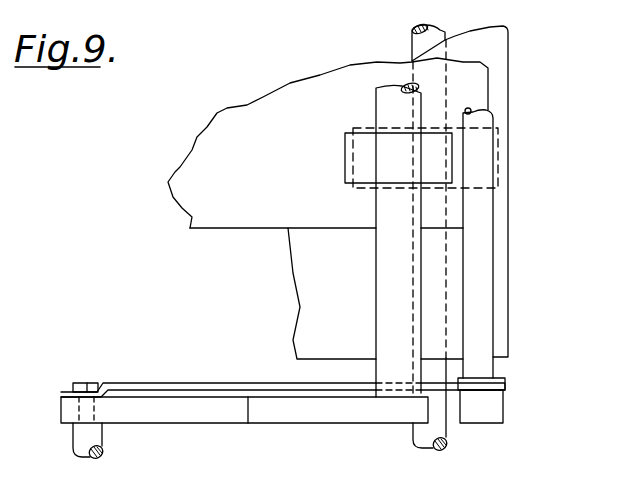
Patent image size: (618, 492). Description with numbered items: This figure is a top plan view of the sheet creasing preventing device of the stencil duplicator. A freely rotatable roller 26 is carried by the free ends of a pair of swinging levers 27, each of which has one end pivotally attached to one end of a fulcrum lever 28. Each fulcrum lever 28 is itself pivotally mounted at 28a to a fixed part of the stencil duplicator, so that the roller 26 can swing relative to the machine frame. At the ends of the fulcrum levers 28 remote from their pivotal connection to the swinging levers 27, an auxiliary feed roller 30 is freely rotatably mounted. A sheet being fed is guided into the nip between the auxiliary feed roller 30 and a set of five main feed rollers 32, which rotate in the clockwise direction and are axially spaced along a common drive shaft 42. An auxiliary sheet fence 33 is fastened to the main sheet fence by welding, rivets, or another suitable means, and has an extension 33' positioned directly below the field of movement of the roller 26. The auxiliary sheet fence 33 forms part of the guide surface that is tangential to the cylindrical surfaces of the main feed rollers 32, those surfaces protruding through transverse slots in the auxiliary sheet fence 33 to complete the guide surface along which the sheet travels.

The freely rotatable roller 26 is at (486, 213).
The swinging lever 27 is at (208, 382).
The fulcrum lever 28 is at (220, 412).
The pivot mounting of fulcrum lever 28a is at (100, 440).
The auxiliary feed roller 30 is at (345, 156).
The main feed roller 32 is at (352, 188).
The auxiliary sheet fence 33 is at (328, 208).
The extension of auxiliary sheet fence 33' is at (484, 191).
The drive shaft 42 is at (443, 433).